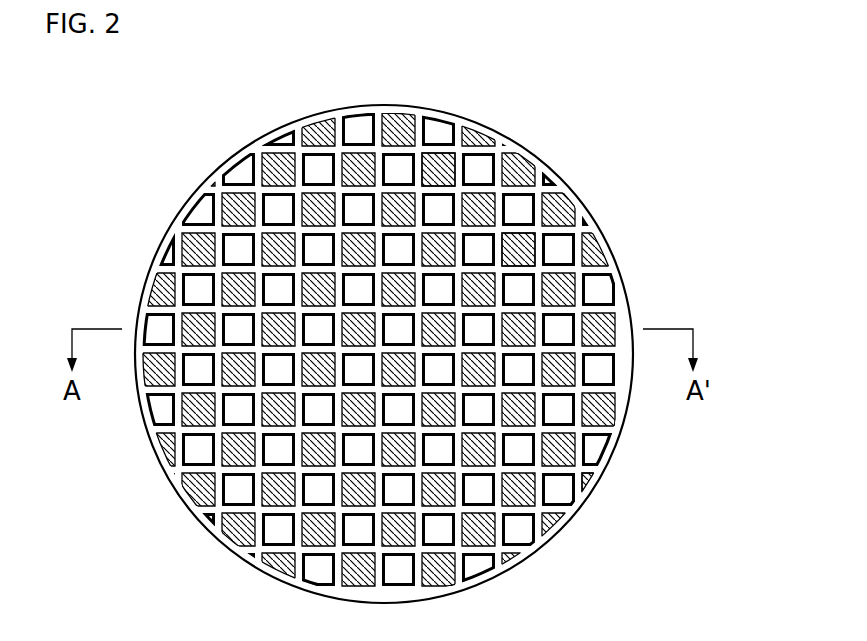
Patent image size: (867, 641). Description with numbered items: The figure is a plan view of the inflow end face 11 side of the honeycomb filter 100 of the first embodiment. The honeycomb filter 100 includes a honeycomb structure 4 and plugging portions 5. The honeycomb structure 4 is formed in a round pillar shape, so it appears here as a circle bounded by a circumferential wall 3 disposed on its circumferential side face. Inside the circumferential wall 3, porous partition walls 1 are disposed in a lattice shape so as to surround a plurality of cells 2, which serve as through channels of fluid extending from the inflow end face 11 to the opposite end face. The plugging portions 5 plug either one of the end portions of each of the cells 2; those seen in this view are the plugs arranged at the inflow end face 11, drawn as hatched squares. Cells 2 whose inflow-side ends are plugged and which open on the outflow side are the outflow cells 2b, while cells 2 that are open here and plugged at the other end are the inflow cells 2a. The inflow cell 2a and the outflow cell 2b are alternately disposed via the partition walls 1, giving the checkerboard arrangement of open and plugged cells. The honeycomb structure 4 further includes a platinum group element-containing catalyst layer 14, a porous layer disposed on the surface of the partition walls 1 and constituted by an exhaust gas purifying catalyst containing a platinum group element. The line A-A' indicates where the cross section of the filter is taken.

The honeycomb filter 100 is at (731, 81).
The inflow end face 11 is at (188, 169).
The honeycomb structure 4 is at (645, 290).
The partition walls 1 is at (497, 207).
The platinum group element-containing catalyst layer 14 is at (333, 173).
The plugging portions 5 is at (433, 178).
The cells 2 is at (603, 203).
The inflow cell 2a is at (520, 215).
The outflow cell 2b is at (517, 255).
The circumferential wall 3 is at (577, 502).